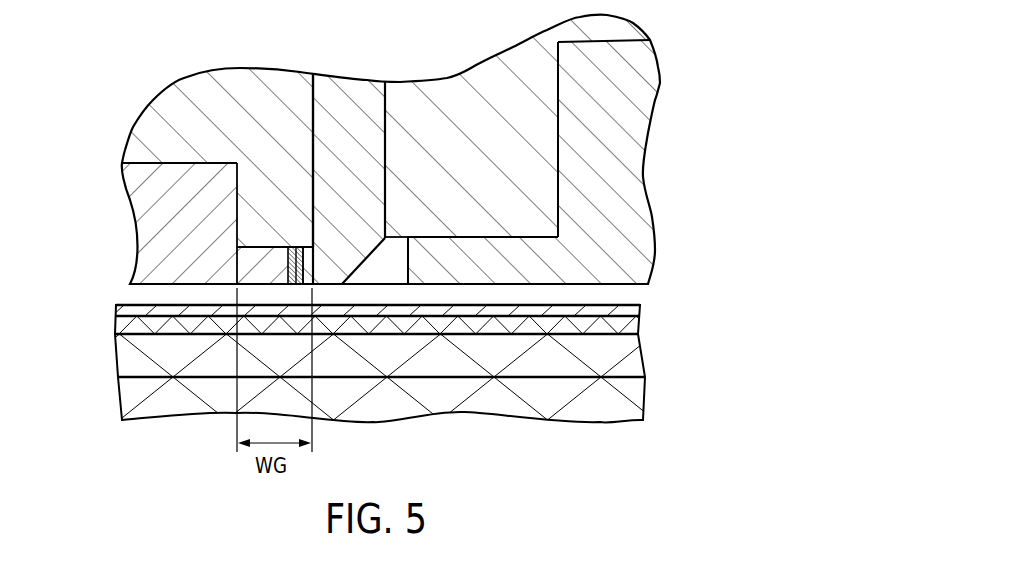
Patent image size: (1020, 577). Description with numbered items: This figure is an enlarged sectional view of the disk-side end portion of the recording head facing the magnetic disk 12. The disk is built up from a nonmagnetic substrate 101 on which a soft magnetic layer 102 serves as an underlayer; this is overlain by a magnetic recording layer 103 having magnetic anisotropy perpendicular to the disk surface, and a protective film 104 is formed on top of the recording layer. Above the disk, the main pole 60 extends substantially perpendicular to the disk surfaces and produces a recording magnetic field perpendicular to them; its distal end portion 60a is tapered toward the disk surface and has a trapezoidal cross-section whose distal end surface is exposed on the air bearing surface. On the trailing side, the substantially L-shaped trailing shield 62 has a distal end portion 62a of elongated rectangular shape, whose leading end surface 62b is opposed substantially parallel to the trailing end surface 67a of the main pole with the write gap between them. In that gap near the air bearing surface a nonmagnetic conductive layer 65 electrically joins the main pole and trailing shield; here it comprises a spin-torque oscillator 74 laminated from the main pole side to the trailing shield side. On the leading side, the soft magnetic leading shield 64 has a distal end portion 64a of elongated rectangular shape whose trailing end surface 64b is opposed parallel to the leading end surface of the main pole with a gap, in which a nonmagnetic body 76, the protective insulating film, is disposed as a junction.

The magnetic disk 12 is at (355, 392).
The main pole 60 is at (357, 85).
The distal end portion of the main pole 60a is at (337, 244).
The trailing shield 62 is at (130, 172).
The distal end portion of the trailing shield 62a is at (160, 267).
The leading end surface of the trailing shield 62b is at (242, 176).
The leading shield 64 is at (650, 108).
The distal end portion of the leading shield 64a is at (557, 115).
The trailing end surface of the leading shield 64b is at (408, 265).
The nonmagnetic conductive layer 65 is at (268, 287).
The trailing end surface of the main pole 67a is at (311, 162).
The spin-torque oscillator 74 is at (291, 248).
The nonmagnetic body 76 is at (366, 278).
The substrate 101 is at (128, 402).
The soft magnetic layer 102 is at (120, 354).
The magnetic recording layer 103 is at (118, 323).
The protective film 104 is at (115, 304).